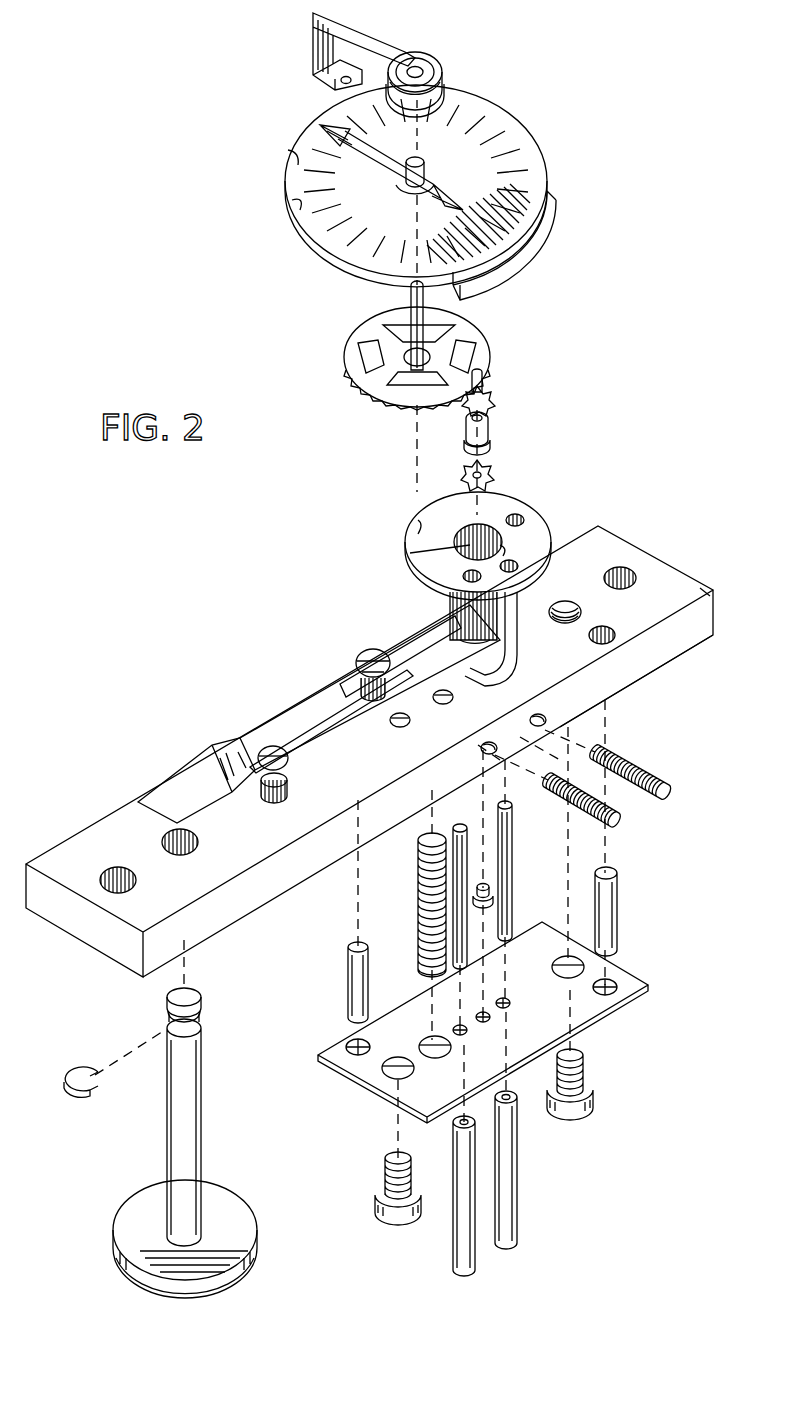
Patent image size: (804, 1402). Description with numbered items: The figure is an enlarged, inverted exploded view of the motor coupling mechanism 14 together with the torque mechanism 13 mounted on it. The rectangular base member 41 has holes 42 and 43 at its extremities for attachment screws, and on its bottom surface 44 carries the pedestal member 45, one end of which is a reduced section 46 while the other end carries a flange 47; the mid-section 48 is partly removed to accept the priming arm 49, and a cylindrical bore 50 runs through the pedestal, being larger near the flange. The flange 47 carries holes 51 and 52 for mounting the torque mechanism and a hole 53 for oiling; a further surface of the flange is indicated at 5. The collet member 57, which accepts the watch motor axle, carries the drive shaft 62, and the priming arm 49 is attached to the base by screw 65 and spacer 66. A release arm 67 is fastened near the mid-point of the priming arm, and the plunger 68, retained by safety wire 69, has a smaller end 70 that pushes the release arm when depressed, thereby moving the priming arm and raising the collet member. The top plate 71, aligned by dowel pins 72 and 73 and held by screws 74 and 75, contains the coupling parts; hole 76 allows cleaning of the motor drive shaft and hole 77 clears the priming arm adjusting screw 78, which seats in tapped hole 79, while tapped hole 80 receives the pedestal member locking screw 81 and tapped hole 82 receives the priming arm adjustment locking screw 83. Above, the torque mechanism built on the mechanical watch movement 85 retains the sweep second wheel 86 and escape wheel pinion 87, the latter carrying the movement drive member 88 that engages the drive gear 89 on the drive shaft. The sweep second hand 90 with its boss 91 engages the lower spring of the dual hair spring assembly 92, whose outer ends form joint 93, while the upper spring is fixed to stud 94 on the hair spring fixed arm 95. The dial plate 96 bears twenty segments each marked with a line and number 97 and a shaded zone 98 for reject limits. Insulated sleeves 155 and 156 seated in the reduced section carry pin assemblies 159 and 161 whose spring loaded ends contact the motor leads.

The torque mechanism 13 is at (552, 156).
The motor coupling mechanism 14 is at (622, 530).
The base member 41 is at (672, 660).
The hole 42 is at (640, 570).
The hole 43 is at (112, 866).
The bottom surface 44 is at (704, 586).
The pedestal member 45 is at (456, 496).
The reduced section 46 is at (520, 636).
The flange 47 is at (418, 528).
The mid-section 48 is at (450, 602).
The priming arm 49 is at (420, 645).
The cylindrical bore 50 is at (492, 528).
The hole 51 is at (522, 516).
The hole 52 is at (515, 560).
The hole 53 is at (462, 576).
The disk surface 5 is at (513, 540).
The collet member 57 is at (488, 884).
The drive shaft 62 is at (410, 553).
The screw 65 is at (296, 764).
The spacer 66 is at (288, 794).
The release arm 67 is at (285, 692).
The plunger 68 is at (202, 1096).
The safety wire 69 is at (74, 1056).
The smaller end 70 is at (188, 990).
The top plate 71 is at (606, 1006).
The dowel pin 72 is at (602, 872).
The dowel pin 73 is at (346, 984).
The screw 74 is at (376, 1174).
The screw 75 is at (586, 1076).
The hole 76 is at (486, 1022).
The hole 77 is at (444, 1052).
The priming arm adjusting screw 78 is at (416, 898).
The tapped hole 79 is at (432, 700).
The tapped hole 80 is at (542, 714).
The pedestal member locking screw 81 is at (670, 780).
The tapped hole 82 is at (484, 754).
The priming arm adjustment locking screw 83 is at (608, 836).
The mechanical watch movement 85 is at (497, 274).
The sweep second wheel 86 is at (488, 336).
The escape wheel pinion 87 is at (494, 396).
The movement drive member 88 is at (492, 436).
The drive gear 89 is at (496, 476).
The sweep second hand 90 is at (330, 125).
The boss 91 is at (426, 160).
The dual hair spring assembly 92 is at (436, 62).
The joint 93 is at (450, 84).
The stud 94 is at (418, 66).
The hair spring fixed arm 95 is at (360, 20).
The dial plate 96 is at (288, 152).
The line and number 97 is at (292, 200).
The shaded zone 98 is at (522, 193).
The insulated sleeve 155 is at (518, 1210).
The insulated sleeve 156 is at (452, 1255).
The pin assembly 159 is at (462, 968).
The pin assembly 161 is at (512, 900).